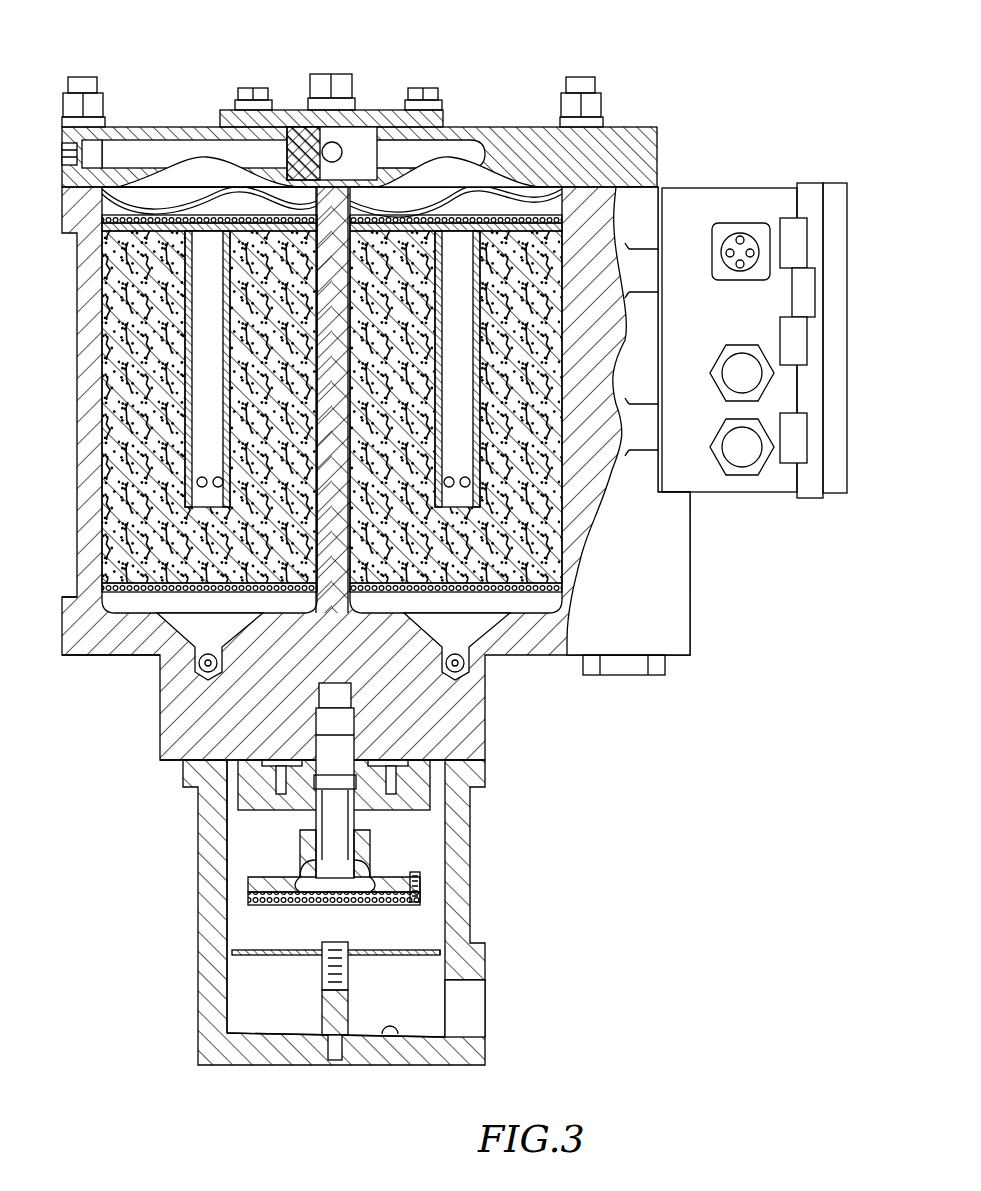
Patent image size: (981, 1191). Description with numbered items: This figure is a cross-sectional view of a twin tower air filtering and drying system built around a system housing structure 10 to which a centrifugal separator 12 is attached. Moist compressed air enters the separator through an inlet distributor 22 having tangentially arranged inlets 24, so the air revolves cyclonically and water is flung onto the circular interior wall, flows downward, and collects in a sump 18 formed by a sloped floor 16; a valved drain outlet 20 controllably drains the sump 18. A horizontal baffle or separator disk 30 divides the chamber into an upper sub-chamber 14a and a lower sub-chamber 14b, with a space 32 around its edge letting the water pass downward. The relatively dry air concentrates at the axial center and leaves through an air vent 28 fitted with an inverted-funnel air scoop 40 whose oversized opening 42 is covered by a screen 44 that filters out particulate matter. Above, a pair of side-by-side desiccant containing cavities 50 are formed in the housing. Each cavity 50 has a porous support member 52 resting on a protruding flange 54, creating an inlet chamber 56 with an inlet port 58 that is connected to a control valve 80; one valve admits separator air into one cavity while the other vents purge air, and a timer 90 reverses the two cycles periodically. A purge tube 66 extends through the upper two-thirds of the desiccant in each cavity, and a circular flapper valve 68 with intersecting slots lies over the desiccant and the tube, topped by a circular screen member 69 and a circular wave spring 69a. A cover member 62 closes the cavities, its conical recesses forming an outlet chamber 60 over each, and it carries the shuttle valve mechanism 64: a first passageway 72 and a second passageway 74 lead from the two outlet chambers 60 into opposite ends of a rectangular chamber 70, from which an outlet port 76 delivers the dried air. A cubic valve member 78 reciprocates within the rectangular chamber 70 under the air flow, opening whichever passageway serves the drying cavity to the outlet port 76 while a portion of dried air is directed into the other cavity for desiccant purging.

The system housing structure 10 is at (62, 633).
The centrifugal separator 12 is at (472, 874).
The upper sub-chamber 14a is at (237, 833).
The lower sub-chamber 14b is at (235, 988).
The sloped floor 16 is at (384, 1036).
The sump 18 is at (292, 1006).
The valved drain outlet 20 is at (473, 1023).
The inlet distributor 22 is at (417, 788).
The tangentially arranged inlets 24 is at (282, 767).
The air vent 28 is at (338, 822).
The baffle or separator disk 30 is at (402, 952).
The space 32 is at (443, 957).
The air scoop 40 is at (305, 850).
The oversized opening 42 is at (315, 895).
The screen 44 is at (255, 910).
The desiccant containing cavities 50 is at (100, 400).
The porous support member 52 is at (142, 594).
The protruding flange 54 is at (80, 612).
The inlet chamber 56 is at (226, 632).
The inlet port 58 is at (199, 667).
The outlet chamber 60 is at (176, 196).
The cover member 62 is at (619, 146).
The shuttle valve mechanism 64 is at (268, 78).
The purge tube 66 is at (205, 352).
The flapper valve 68 is at (102, 233).
The circular screen member 69 is at (102, 190).
The circular wave spring 69a is at (196, 215).
The rectangular chamber 70 is at (352, 140).
The first passageway 72 is at (118, 147).
The second passageway 74 is at (445, 148).
The outlet port 76 is at (333, 142).
The valve member 78 is at (302, 128).
The control valve 80 is at (652, 590).
The timer 90 is at (718, 188).